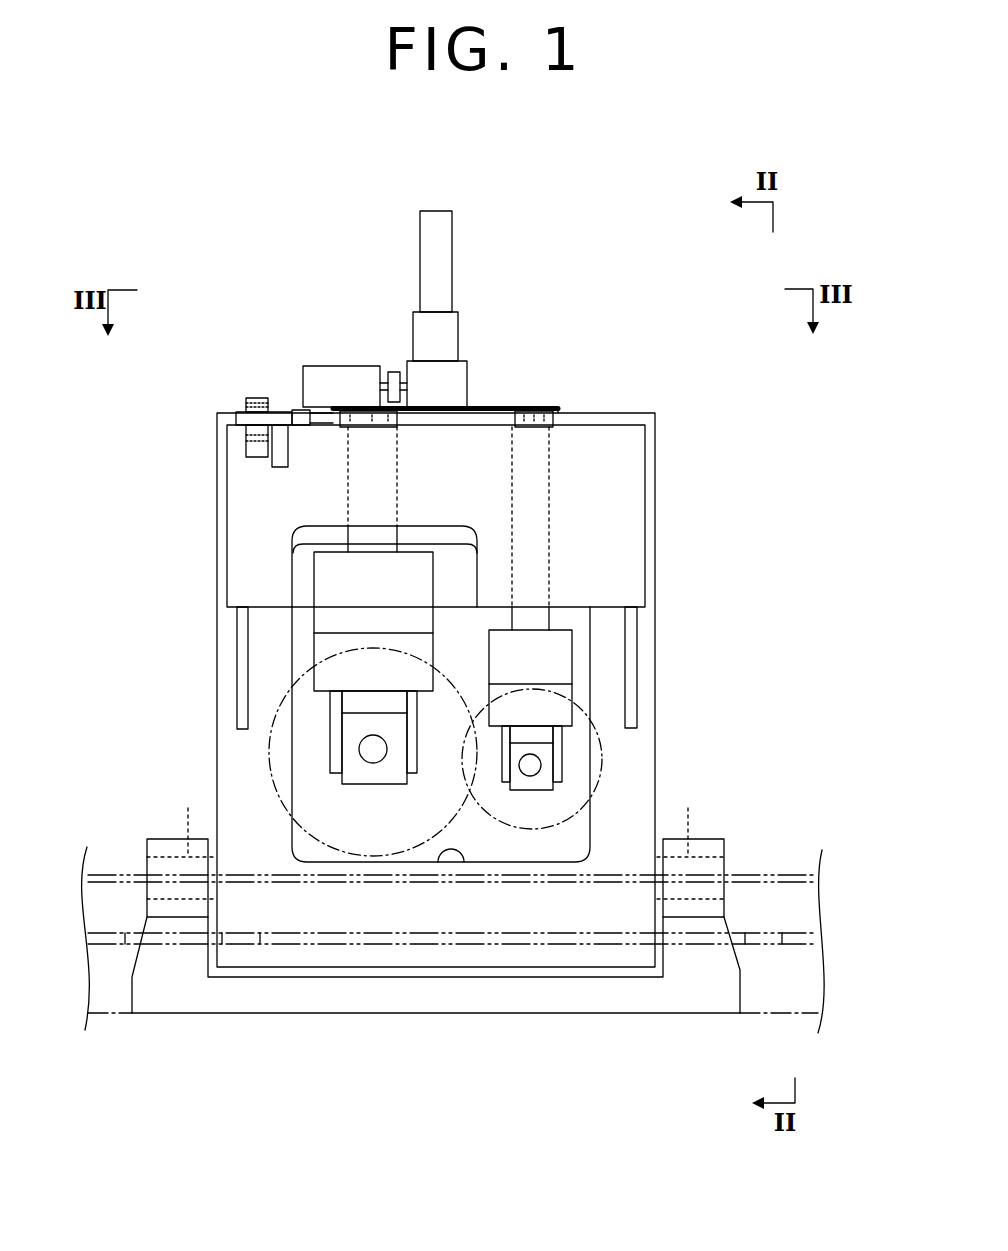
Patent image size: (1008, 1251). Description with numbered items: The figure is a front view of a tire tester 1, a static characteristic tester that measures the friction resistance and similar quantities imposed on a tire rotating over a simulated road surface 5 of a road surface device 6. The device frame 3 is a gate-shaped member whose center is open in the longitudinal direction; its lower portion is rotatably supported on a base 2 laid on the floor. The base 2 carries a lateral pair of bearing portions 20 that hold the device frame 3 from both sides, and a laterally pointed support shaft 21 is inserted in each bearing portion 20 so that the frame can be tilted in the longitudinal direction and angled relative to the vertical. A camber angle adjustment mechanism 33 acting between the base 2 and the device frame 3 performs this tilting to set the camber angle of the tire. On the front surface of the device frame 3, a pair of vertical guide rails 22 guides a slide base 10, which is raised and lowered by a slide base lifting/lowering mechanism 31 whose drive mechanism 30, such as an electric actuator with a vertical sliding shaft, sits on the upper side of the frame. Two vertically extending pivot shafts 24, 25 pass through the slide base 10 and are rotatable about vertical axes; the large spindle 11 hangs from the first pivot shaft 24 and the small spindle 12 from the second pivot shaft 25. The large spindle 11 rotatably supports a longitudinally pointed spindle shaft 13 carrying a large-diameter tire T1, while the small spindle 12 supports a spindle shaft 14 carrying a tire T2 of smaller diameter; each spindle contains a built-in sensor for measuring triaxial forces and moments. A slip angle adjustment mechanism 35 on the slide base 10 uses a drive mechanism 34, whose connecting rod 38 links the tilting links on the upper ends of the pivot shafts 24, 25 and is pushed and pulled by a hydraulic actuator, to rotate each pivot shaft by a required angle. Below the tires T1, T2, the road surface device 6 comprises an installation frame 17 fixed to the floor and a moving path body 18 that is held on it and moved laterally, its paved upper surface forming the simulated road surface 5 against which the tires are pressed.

The tire tester 1 is at (577, 238).
The base 2 is at (742, 990).
The device frame 3 is at (657, 553).
The simulated road surface 5 is at (460, 878).
The road surface device 6 is at (791, 857).
The slide base 10 is at (606, 425).
The large spindle 11 is at (370, 713).
The small spindle 12 is at (522, 742).
The spindle shaft 13 is at (373, 762).
The spindle shaft 14 is at (530, 776).
The installation frame 17 is at (780, 968).
The moving path body 18 is at (780, 897).
The bearing portions 20 is at (160, 838).
The support shaft 21 is at (435, 818).
The guide rails 22 is at (235, 723).
The first pivot shaft 24 is at (400, 478).
The second pivot shaft 25 is at (553, 508).
The drive mechanism 30 is at (458, 333).
The slide base lifting/lowering mechanism 31 is at (494, 339).
The camber angle adjustment mechanism 33 is at (733, 777).
The drive mechanism 34 is at (278, 403).
The slip angle adjustment mechanism 35 is at (235, 382).
The connecting rod 38 is at (480, 403).
The large-diameter tire T1 is at (278, 708).
The tire T2 is at (604, 692).